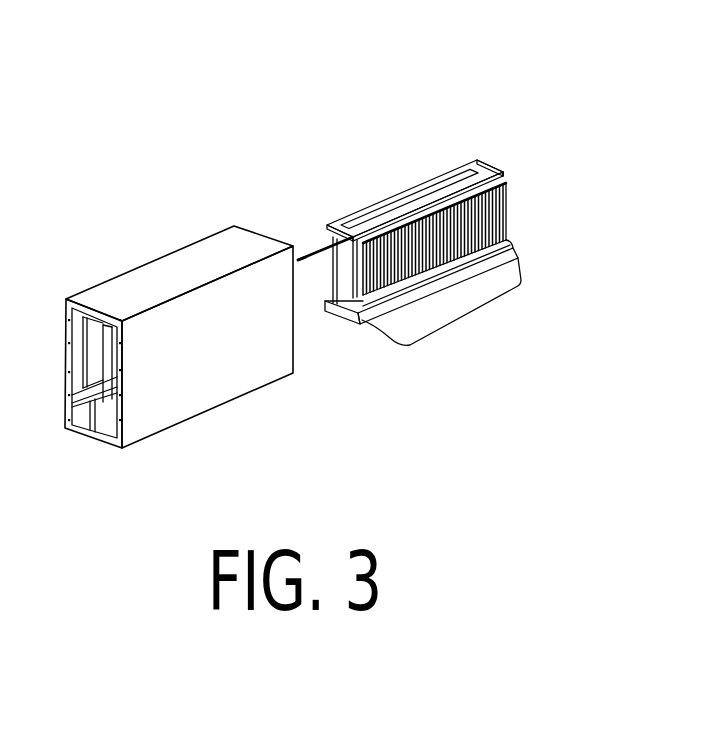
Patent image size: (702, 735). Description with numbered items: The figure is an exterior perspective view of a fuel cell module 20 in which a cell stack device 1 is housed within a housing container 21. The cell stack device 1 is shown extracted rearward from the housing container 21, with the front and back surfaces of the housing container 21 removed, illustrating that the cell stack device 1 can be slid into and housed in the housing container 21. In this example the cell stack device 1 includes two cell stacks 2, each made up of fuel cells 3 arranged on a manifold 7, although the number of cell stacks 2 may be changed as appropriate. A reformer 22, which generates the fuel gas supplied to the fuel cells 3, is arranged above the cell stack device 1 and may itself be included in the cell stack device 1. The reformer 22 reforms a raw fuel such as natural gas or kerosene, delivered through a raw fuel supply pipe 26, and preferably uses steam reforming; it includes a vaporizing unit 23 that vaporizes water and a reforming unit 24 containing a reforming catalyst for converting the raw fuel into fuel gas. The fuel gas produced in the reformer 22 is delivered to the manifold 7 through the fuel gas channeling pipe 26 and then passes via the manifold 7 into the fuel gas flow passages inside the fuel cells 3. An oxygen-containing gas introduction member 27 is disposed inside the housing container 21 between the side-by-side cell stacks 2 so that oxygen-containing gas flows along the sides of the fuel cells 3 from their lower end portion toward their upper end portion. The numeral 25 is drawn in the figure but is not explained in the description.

The cell stack device 1 is at (527, 210).
The cell stack 2 is at (478, 308).
The fuel cell 3 is at (511, 181).
The manifold 7 is at (367, 323).
The module 20 is at (138, 74).
The housing container 21 is at (203, 247).
The reformer 22 is at (334, 233).
The vaporizing unit 23 is at (393, 220).
The reforming unit 24 is at (485, 172).
The pin 25 is at (328, 238).
The raw fuel supply pipe 26 is at (293, 252).
The oxygen-containing gas introduction member 27 is at (112, 340).